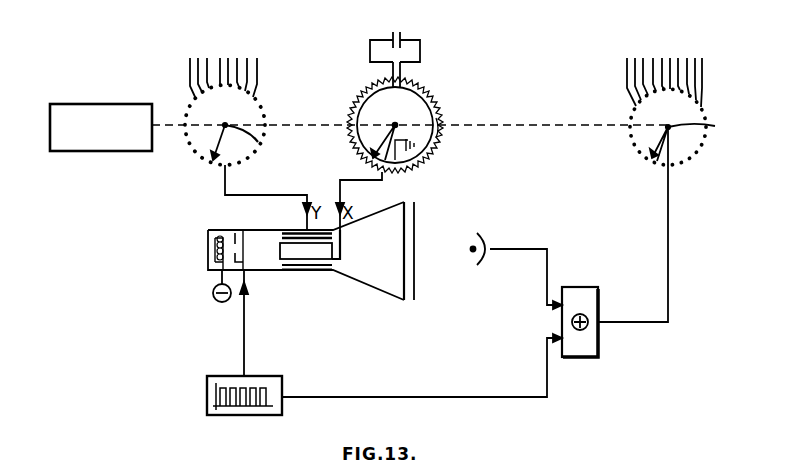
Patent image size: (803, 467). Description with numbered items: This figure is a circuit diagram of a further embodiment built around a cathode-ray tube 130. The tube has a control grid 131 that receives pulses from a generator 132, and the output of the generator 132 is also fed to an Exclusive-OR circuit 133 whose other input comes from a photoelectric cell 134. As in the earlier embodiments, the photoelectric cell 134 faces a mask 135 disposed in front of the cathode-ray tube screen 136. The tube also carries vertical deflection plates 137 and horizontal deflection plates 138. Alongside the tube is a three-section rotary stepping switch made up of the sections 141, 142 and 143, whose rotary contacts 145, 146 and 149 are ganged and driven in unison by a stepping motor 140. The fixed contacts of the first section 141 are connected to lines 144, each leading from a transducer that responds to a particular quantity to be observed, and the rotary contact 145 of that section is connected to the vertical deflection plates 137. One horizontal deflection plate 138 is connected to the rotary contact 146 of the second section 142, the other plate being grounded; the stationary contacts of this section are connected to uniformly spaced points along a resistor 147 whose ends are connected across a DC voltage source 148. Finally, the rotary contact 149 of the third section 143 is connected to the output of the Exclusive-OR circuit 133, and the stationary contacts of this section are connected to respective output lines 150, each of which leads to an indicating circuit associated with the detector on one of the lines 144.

The cathode-ray tube 130 is at (394, 300).
The control grid 131 is at (233, 232).
The generator 132 is at (283, 393).
The Exclusive-OR circuit 133 is at (593, 357).
The photoelectric cell 134 is at (480, 233).
The mask 135 is at (414, 229).
The cathode-ray tube screen 136 is at (404, 202).
The vertical deflection plates 137 is at (289, 230).
The horizontal deflection plates 138 is at (281, 255).
The stepping motor 140 is at (103, 103).
The first switch section 141 is at (255, 101).
The second switch section 142 is at (430, 107).
The third switch section 143 is at (703, 107).
The lines 144 is at (221, 62).
The rotary contact 145 is at (258, 142).
The rotary contact 146 is at (397, 124).
The resistor 147 is at (438, 135).
The DC voltage source 148 is at (401, 33).
The rotary contact 149 is at (708, 126).
The output lines 150 is at (677, 62).